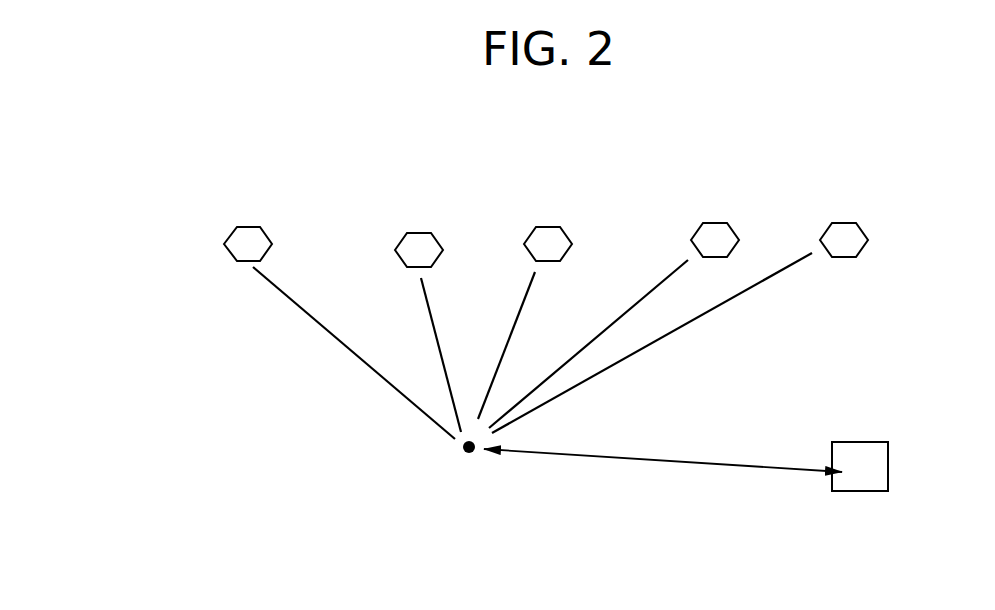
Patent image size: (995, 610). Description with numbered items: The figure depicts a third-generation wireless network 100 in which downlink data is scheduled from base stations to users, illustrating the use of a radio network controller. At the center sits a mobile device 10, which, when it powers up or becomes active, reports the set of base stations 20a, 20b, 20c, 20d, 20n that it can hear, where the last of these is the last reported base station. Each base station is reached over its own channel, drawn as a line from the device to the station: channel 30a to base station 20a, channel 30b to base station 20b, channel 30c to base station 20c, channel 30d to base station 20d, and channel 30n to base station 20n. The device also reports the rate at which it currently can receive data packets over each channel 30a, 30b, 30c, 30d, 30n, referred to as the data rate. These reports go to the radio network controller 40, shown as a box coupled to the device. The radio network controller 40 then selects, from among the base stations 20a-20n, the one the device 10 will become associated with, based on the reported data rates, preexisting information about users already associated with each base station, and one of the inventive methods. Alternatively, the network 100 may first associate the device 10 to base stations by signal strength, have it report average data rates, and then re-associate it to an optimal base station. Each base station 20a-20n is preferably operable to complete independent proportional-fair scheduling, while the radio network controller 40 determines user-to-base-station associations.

The 3G wireless network 100 is at (206, 388).
The mobile device 10 is at (483, 456).
The base station 20a is at (261, 227).
The base station 20b is at (422, 233).
The base station 20c is at (551, 227).
The base station 20d is at (723, 223).
The base station 20n is at (868, 240).
The channel 30a is at (375, 372).
The channel 30b is at (436, 335).
The channel 30c is at (507, 343).
The channel 30d is at (610, 326).
The channel 30n is at (675, 330).
The radio network controller 40 is at (850, 492).